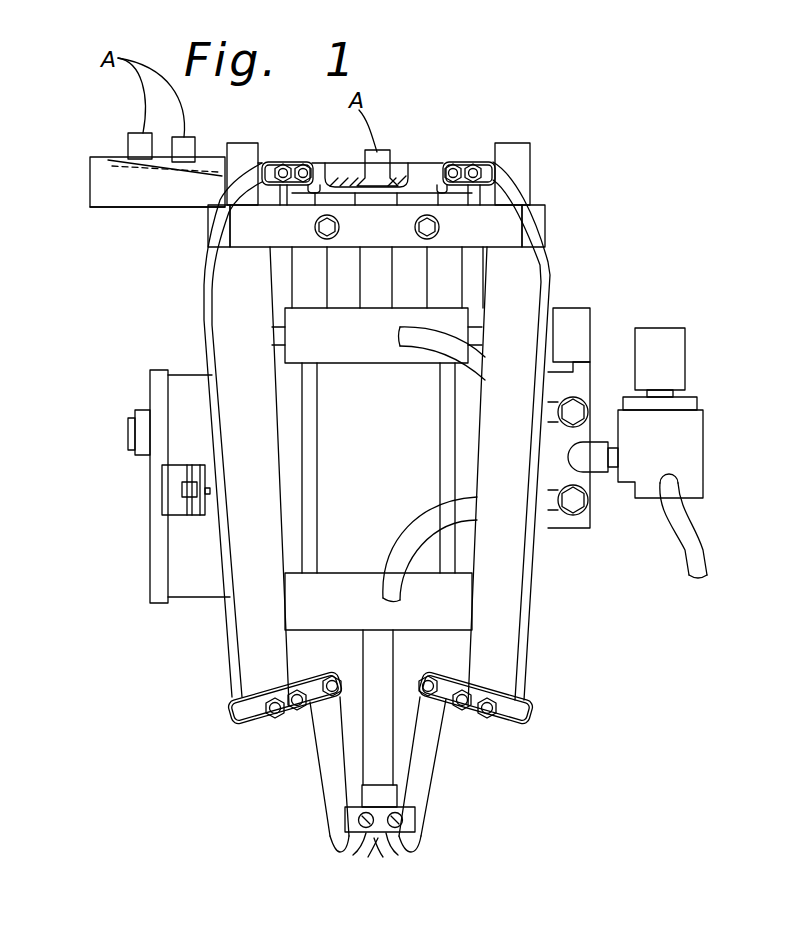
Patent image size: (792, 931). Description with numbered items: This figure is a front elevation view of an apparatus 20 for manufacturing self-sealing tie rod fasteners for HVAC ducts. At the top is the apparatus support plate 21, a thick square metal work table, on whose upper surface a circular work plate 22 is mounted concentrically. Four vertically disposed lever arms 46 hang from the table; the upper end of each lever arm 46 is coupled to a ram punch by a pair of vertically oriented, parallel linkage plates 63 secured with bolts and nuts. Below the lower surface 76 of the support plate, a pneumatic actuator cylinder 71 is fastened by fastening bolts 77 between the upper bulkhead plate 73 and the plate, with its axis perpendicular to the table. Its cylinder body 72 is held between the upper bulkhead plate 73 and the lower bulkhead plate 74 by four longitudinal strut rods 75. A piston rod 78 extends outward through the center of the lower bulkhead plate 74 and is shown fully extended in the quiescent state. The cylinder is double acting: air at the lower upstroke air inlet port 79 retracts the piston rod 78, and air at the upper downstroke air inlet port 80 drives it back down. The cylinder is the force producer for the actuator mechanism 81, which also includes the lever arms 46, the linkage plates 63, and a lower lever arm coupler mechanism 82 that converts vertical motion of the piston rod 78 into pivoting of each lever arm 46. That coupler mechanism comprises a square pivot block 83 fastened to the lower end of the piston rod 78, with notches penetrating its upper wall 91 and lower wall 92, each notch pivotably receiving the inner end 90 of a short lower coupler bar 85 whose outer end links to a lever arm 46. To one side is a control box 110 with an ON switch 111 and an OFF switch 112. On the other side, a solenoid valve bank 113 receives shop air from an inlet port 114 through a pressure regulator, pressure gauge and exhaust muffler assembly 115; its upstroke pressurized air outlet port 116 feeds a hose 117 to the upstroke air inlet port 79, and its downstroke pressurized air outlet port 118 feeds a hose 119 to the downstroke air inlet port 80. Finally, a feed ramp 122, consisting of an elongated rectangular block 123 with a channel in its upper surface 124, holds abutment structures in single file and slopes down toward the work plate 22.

The apparatus 20 is at (429, 132).
The apparatus support plate 21 is at (517, 215).
The work plate 22 is at (424, 166).
The lever arm 46 is at (226, 651).
The linkage plates 63 is at (456, 166).
The pneumatic actuator cylinder 71 is at (273, 407).
The cylinder body 72 is at (338, 392).
The upper bulkhead plate 73 is at (470, 320).
The lower bulkhead plate 74 is at (440, 610).
The strut rods 75 is at (437, 497).
The lower surface 76 is at (258, 250).
The fastening bolts 77 is at (403, 280).
The piston rod 78 is at (375, 745).
The upstroke air inlet port 79 is at (380, 600).
The downstroke air inlet port 80 is at (400, 334).
The actuator mechanism 81 is at (456, 794).
The lower lever arm coupler mechanism 82 is at (284, 734).
The pivot block 83 is at (368, 846).
The lower coupler bar 85 is at (322, 793).
The inner end 90 is at (340, 851).
The upper wall 91 is at (400, 807).
The lower wall 92 is at (395, 846).
The control box 110 is at (148, 554).
The ON switch 111 is at (65, 452).
The OFF switch 112 is at (128, 432).
The solenoid valve bank 113 is at (590, 375).
The inlet port 114 is at (653, 500).
The pressure regulator, pressure gauge and exhaust muffler assembly 115 is at (703, 462).
The upstroke pressurized air outlet port 116 is at (573, 517).
The hose 117 is at (427, 555).
The downstroke pressurized air outlet port 118 is at (586, 400).
The hose 119 is at (432, 348).
The feed ramp 122 is at (89, 184).
The block 123 is at (106, 207).
The upper surface 124 is at (106, 157).